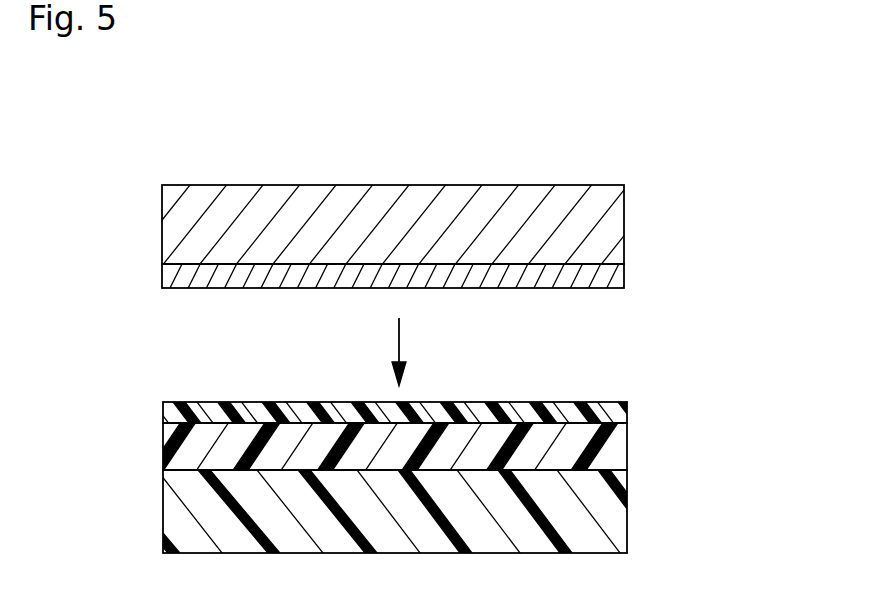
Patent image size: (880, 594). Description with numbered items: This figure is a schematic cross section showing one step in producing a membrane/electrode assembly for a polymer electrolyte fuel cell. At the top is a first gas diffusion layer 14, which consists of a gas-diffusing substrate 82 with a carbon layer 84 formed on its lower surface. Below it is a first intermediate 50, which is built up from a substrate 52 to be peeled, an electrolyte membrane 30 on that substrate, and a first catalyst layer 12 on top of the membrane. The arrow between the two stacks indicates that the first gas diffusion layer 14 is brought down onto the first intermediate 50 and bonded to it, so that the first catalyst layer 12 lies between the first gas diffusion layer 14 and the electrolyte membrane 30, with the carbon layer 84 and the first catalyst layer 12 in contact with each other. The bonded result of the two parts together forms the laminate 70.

The laminate 70 is at (445, 366).
The first gas diffusion layer 14 is at (433, 233).
The gas-diffusing substrate 82 is at (612, 206).
The carbon layer 84 is at (431, 266).
The first intermediate 50 is at (421, 443).
The first catalyst layer 12 is at (627, 412).
The electrolyte membrane 30 is at (627, 447).
The substrate to be peeled 52 is at (622, 512).